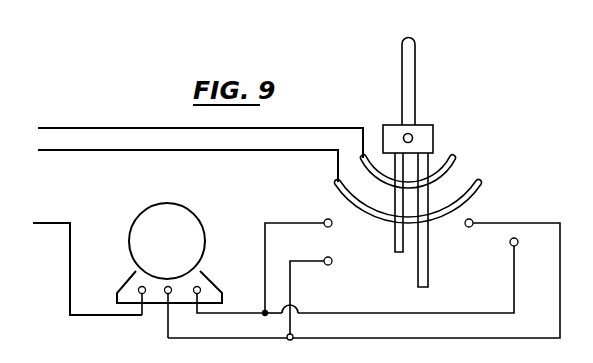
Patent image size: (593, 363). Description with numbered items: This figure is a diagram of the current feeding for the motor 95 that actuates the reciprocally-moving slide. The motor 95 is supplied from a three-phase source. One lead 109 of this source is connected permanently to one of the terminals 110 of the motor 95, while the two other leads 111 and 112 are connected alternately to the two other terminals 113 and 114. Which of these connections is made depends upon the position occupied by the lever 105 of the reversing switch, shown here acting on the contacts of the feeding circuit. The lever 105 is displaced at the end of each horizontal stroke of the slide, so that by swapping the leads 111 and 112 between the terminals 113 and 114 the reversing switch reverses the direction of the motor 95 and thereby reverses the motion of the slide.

The motor 95 is at (187, 207).
The lever 105 is at (409, 72).
The lead 109 is at (45, 226).
The terminal 110 is at (139, 287).
The lead 111 is at (63, 152).
The lead 112 is at (73, 128).
The terminal 113 is at (200, 287).
The terminal 114 is at (171, 286).